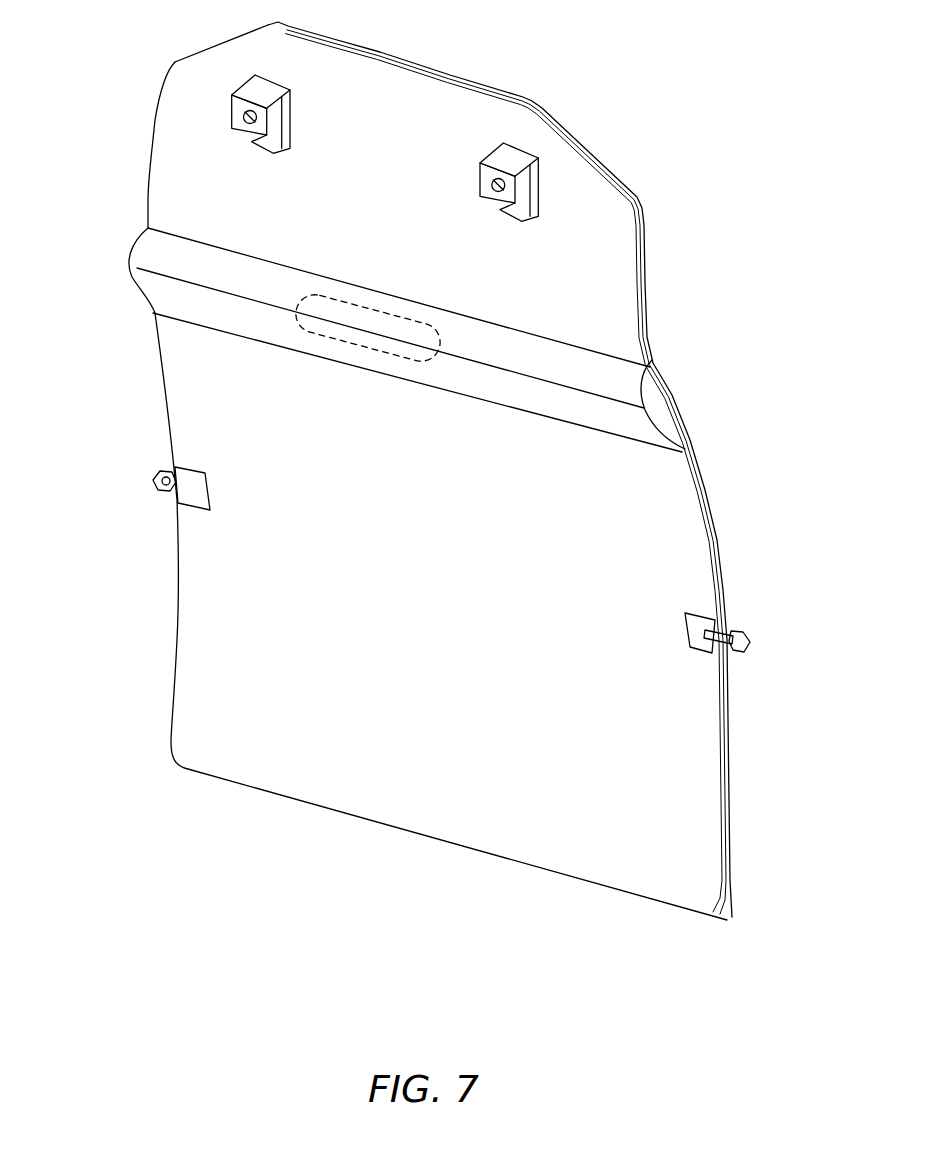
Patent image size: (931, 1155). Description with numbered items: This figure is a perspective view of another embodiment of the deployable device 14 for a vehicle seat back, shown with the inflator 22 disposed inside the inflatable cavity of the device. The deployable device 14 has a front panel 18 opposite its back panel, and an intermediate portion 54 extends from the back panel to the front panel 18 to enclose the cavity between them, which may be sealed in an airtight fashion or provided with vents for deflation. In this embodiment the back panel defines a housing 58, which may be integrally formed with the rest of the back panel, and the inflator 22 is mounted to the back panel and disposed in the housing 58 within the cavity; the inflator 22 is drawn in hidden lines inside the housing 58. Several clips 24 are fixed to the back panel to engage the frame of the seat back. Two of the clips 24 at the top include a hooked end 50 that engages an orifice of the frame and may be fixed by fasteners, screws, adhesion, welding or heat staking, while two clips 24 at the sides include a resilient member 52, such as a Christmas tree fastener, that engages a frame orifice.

The deployable device 14 is at (708, 342).
The front panel 18 is at (652, 294).
The inflator 22 is at (300, 297).
The clip 24 is at (285, 55).
The hooked end 50 is at (230, 115).
The resilient member 52 is at (160, 472).
The intermediate portion 54 is at (700, 478).
The housing 58 is at (128, 256).